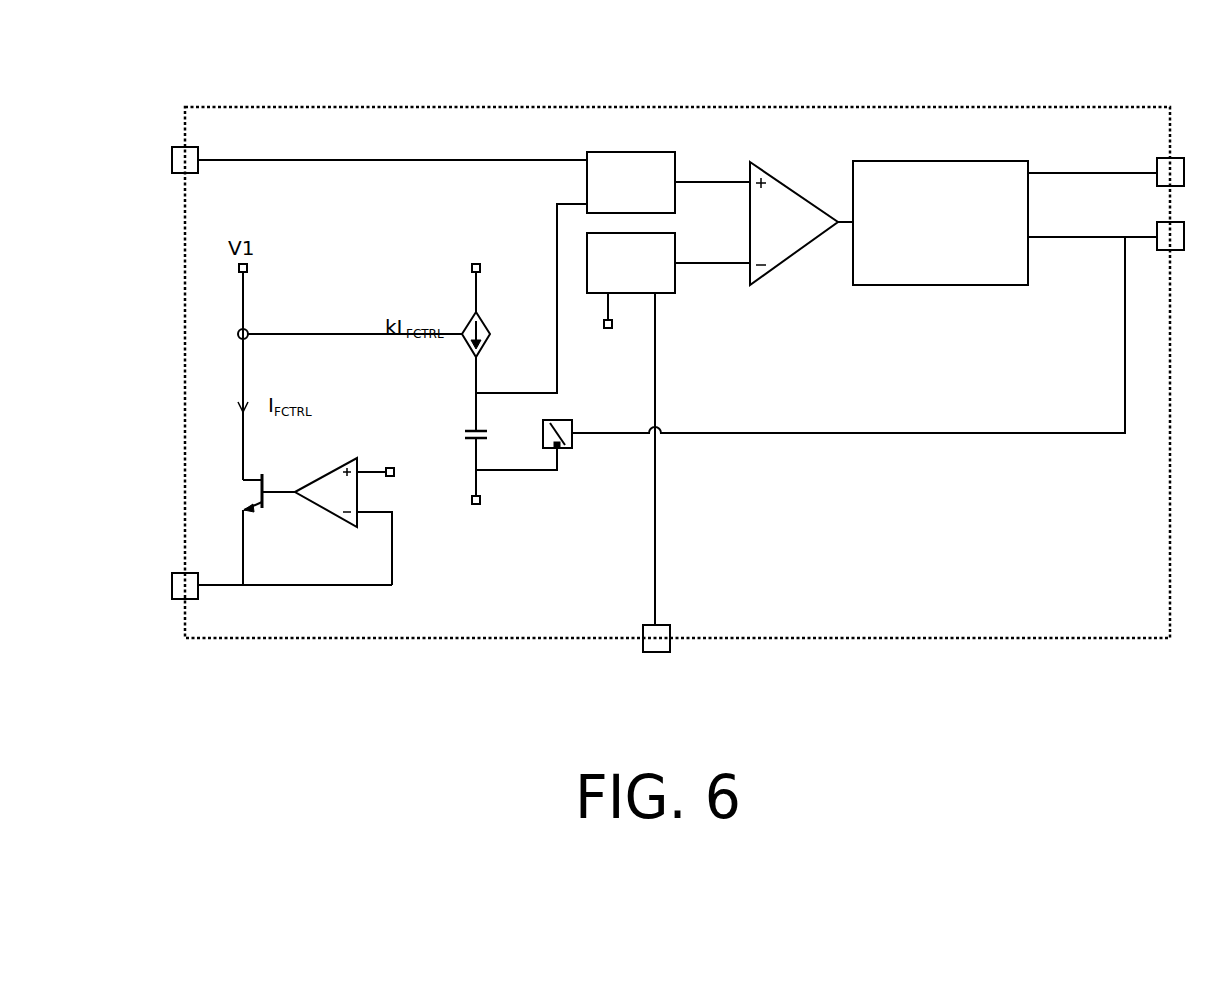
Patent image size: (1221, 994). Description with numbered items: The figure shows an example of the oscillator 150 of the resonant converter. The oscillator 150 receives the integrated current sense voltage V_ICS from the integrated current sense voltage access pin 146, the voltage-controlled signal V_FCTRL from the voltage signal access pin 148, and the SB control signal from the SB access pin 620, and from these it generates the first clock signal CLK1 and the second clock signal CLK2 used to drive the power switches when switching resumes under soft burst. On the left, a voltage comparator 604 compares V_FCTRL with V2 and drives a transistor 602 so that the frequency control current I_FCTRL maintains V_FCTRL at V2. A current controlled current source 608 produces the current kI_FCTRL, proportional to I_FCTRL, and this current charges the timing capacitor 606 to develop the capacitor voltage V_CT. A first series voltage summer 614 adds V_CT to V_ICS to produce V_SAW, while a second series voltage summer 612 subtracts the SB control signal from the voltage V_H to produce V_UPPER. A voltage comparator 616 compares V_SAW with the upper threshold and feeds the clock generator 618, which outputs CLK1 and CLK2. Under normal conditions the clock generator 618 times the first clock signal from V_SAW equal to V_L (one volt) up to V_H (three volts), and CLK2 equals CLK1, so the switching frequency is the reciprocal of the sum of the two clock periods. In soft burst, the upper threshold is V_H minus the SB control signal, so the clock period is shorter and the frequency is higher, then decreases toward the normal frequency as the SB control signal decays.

The oscillator 150 is at (220, 47).
The integrated current sense voltage access pin 146 is at (172, 173).
The voltage signal access pin 148 is at (172, 598).
The transistor 602 is at (263, 478).
The voltage comparator 604 is at (334, 513).
The timing capacitor 606 is at (505, 425).
The current controlled current source 608 is at (482, 318).
The second series voltage summer 612 is at (668, 293).
The first series voltage summer 614 is at (665, 152).
The voltage comparator 616 is at (800, 190).
The clock generator 618 is at (1018, 216).
The SB access pin 620 is at (670, 650).